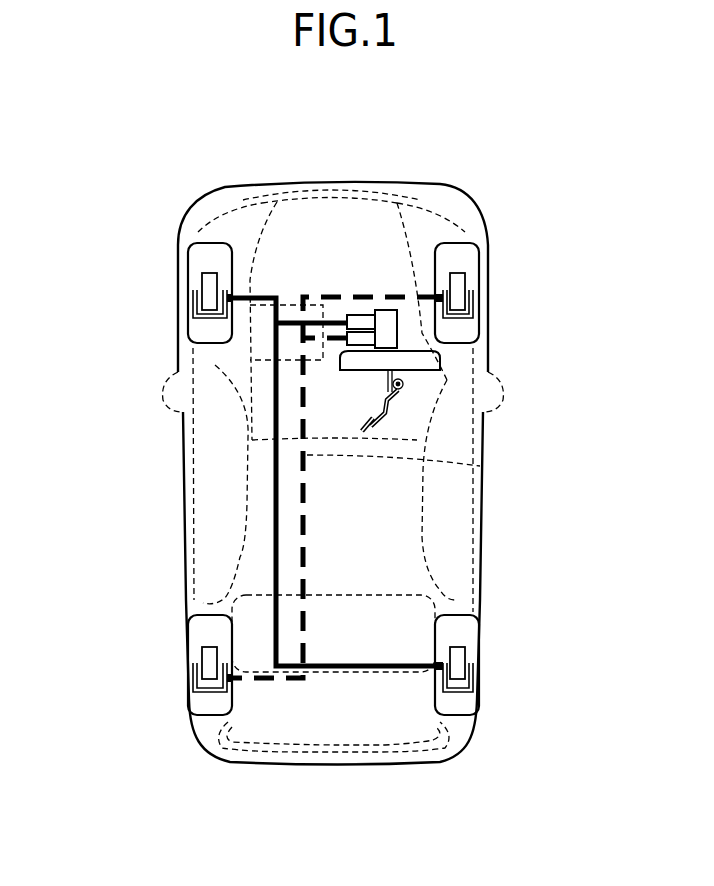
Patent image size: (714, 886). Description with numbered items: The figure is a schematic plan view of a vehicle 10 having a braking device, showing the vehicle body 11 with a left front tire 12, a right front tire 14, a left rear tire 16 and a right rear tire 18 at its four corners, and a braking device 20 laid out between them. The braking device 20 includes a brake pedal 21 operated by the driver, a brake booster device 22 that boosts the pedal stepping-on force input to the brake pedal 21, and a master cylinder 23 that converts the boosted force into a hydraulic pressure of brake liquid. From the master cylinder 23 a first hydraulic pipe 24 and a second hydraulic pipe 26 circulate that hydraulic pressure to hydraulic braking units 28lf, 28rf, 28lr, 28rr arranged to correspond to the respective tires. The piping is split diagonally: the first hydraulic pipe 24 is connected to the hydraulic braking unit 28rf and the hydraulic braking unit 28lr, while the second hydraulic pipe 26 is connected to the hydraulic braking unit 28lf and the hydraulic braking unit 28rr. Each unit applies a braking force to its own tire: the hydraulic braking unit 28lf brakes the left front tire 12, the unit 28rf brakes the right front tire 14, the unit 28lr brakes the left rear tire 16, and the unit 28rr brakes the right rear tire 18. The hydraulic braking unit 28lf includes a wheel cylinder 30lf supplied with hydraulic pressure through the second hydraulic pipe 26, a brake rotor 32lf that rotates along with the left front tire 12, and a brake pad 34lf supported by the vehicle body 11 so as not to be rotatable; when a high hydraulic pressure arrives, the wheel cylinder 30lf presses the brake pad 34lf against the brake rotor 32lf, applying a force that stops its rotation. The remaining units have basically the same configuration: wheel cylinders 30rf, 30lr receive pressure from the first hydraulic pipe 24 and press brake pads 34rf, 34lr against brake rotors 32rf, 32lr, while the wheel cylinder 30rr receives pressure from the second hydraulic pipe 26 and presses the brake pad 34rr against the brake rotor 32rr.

The vehicle 10 is at (172, 158).
The vehicle body 11 is at (425, 186).
The left front tire 12 is at (203, 255).
The right front tire 14 is at (465, 257).
The left rear tire 16 is at (203, 625).
The right rear tire 18 is at (465, 626).
The braking device 20 is at (253, 457).
The brake pedal 21 is at (390, 405).
The brake booster device 22 is at (410, 375).
The master cylinder 23 is at (440, 358).
The first hydraulic pipe 24 is at (480, 466).
The second hydraulic pipe 26 is at (273, 417).
The hydraulic braking unit 28lf is at (98, 273).
The hydraulic braking unit 28rf is at (570, 273).
The hydraulic braking unit 28lr is at (98, 643).
The hydraulic braking unit 28rr is at (570, 643).
The wheel cylinder 30lf is at (228, 351).
The wheel cylinder 30rf is at (440, 361).
The wheel cylinder 30lr is at (228, 716).
The wheel cylinder 30rr is at (440, 723).
The brake rotor 32lf is at (205, 282).
The brake rotor 32rf is at (464, 282).
The brake rotor 32lr is at (203, 653).
The brake rotor 32rr is at (464, 652).
The brake pad 34lf is at (194, 307).
The brake pad 34rf is at (473, 308).
The brake pad 34lr is at (194, 678).
The brake pad 34rr is at (473, 679).